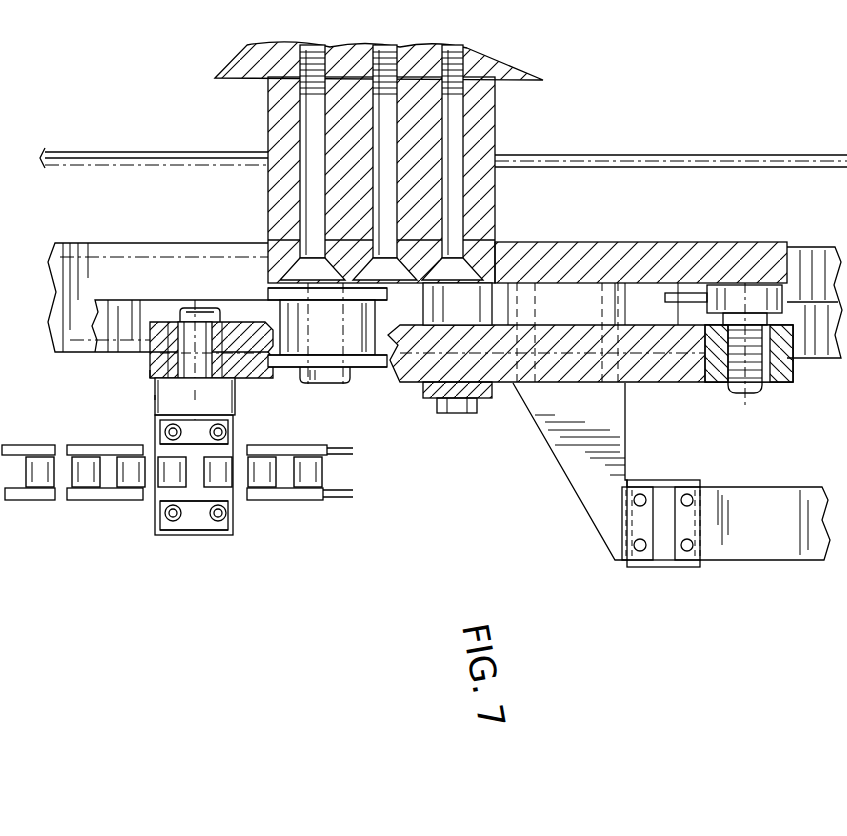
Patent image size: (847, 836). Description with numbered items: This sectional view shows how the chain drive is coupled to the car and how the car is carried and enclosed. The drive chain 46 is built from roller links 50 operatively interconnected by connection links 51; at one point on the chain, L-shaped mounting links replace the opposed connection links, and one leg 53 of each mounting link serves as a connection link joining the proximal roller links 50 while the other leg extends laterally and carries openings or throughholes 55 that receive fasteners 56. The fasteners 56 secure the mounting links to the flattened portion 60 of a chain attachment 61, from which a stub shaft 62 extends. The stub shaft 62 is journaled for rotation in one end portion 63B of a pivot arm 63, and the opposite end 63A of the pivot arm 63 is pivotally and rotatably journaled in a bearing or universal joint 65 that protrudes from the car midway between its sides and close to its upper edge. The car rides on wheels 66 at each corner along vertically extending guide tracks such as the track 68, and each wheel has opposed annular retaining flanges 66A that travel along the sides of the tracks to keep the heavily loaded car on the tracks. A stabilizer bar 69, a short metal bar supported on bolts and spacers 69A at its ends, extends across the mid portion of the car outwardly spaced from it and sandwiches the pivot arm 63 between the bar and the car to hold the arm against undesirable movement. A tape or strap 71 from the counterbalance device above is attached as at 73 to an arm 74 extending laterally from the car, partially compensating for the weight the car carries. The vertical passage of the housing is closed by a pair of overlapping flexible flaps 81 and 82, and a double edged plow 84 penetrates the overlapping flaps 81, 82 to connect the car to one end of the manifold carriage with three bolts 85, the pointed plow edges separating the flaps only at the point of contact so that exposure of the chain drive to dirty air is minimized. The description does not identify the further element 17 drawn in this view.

The mounting flange 17 is at (244, 48).
The drive chain 46 is at (278, 508).
The roller links 50 is at (18, 445).
The connection links 51 is at (78, 445).
The one leg of the L-shaped mounting link 53 is at (155, 397).
The openings or throughholes 55 is at (172, 438).
The fasteners 56 is at (216, 437).
The flattened portion 60 is at (183, 535).
The chain attachment 61 is at (243, 395).
The stub shaft 62 is at (195, 328).
The pivot arm 63 is at (245, 328).
The end of the pivot arm 63A is at (797, 367).
The end portion of the pivot arm 63B is at (148, 375).
The bearing or universal joint 65 is at (773, 383).
The wheels 66 is at (353, 345).
The annular retaining flanges 66A is at (273, 337).
The guide track 68 is at (128, 302).
The stabilizer bar 69 is at (482, 400).
The bolts and spacers 69A is at (473, 303).
The tape or strap 71 is at (778, 548).
The attachment point 73 is at (665, 560).
The arm 74 is at (588, 512).
The flexible flap 81 is at (720, 155).
The flexible flap 82 is at (787, 168).
The double edged plow 84 is at (497, 122).
The bolts 85 is at (303, 130).